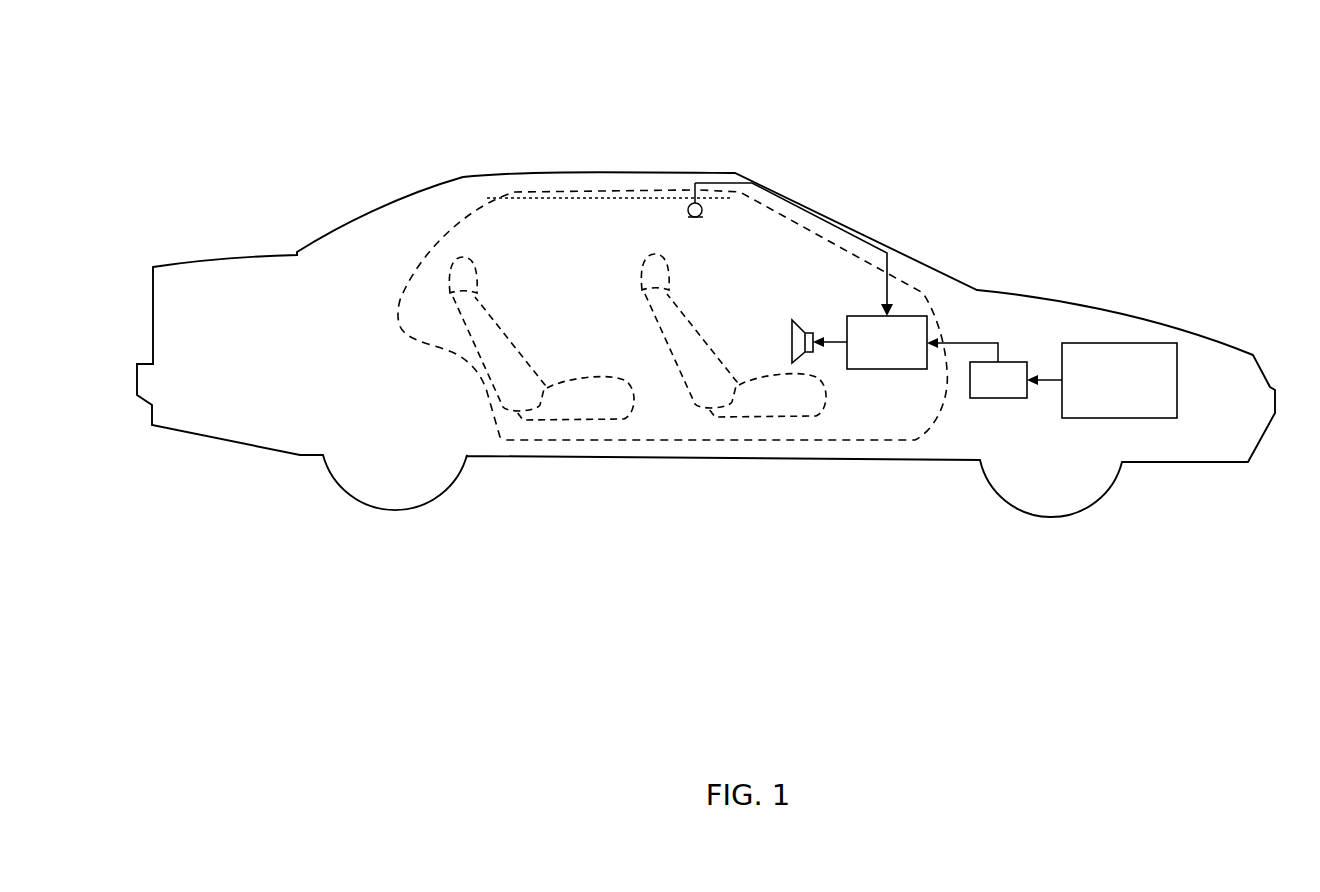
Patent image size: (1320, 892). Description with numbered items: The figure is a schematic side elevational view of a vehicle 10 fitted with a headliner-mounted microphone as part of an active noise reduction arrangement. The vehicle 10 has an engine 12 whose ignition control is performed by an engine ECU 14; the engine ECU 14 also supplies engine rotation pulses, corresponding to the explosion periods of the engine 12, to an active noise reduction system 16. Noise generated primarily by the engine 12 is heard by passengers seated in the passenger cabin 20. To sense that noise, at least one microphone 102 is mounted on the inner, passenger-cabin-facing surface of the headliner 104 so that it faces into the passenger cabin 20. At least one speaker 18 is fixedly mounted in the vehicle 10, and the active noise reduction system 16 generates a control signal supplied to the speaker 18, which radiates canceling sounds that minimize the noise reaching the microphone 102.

The vehicle 10 is at (364, 138).
The engine 12 is at (1120, 343).
The engine ECU 14 is at (1018, 362).
The active noise reduction system 16 is at (910, 316).
The speaker 18 is at (790, 340).
The passenger cabin 20 is at (576, 314).
The microphone 102 is at (702, 212).
The headliner 104 is at (585, 199).